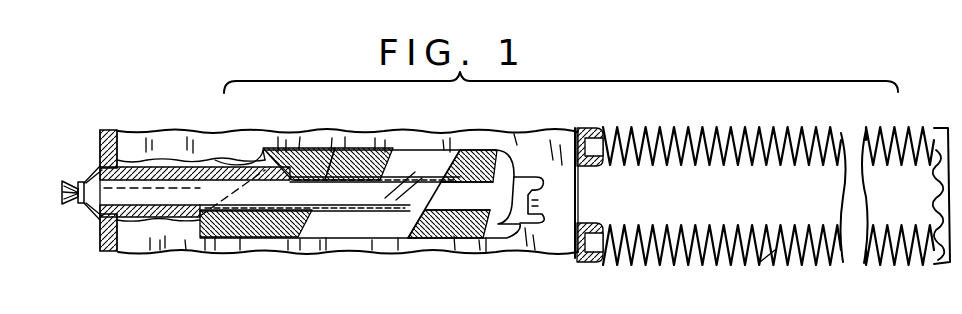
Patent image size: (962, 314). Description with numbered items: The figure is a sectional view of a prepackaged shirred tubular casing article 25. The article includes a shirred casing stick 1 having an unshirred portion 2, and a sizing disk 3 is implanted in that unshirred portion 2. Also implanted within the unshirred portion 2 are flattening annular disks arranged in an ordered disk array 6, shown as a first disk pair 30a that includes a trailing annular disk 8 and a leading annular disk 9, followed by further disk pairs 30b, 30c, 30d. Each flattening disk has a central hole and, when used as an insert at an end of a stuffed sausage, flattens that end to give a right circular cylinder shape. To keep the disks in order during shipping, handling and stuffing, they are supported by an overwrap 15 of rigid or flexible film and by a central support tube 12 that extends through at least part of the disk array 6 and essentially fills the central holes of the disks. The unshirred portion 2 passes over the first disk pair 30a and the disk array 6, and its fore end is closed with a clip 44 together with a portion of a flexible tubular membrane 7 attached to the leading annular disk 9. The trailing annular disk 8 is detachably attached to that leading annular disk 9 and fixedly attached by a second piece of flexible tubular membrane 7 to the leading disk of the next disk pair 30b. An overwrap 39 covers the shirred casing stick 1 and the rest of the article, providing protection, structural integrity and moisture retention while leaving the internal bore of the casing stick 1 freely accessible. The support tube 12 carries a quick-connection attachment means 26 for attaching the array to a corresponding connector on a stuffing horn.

The shirred casing stick 1 is at (773, 253).
The unshirred portion 2 is at (150, 253).
The sizing disk 3 is at (593, 167).
The disk array 6 is at (250, 162).
The flexible tubular membrane 7 is at (162, 162).
The trailing annular disk 8 is at (118, 148).
The leading annular disk 9 is at (102, 149).
The central support tube 12 is at (328, 203).
The overwrap 15 is at (487, 153).
The prepackaged shirred tubular casing article 25 is at (672, 121).
The quick-connection attachment means 26 is at (565, 193).
The first disk pair 30a is at (101, 127).
The next disk pair 30b is at (315, 152).
The piston section 30c is at (343, 152).
The piston section 30d is at (380, 152).
The overwrap 39 is at (733, 127).
The clip 44 is at (78, 204).